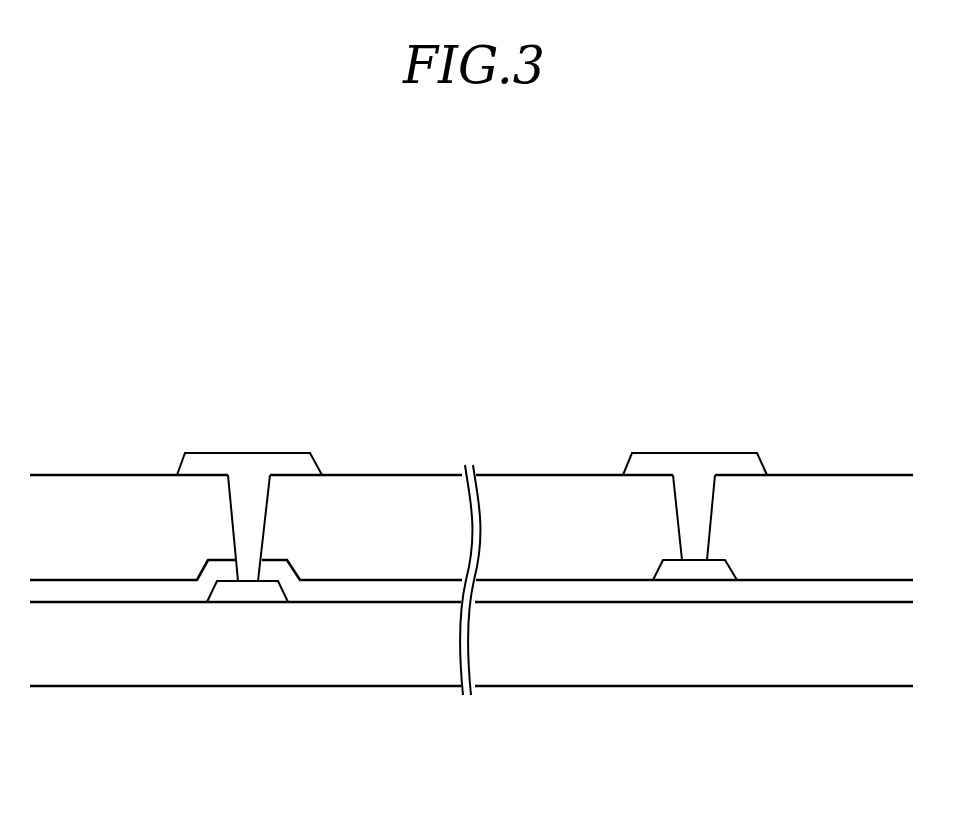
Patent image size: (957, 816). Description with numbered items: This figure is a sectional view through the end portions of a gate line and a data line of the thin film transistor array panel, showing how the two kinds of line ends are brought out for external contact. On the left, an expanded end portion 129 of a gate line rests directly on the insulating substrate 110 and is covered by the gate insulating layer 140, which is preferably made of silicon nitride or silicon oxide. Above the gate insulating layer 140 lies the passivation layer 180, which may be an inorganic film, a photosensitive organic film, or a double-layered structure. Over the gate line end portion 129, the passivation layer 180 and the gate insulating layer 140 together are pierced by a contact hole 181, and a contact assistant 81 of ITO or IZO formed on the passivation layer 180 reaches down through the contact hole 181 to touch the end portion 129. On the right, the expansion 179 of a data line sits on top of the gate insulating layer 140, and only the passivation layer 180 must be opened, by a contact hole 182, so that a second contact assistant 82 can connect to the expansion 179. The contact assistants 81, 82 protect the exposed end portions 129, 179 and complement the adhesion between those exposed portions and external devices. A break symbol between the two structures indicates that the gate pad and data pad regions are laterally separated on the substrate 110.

The passivation layer 180 is at (837, 518).
The contact assistant 81 is at (287, 460).
The contact assistant 82 is at (731, 460).
The contact hole 181 is at (243, 492).
The contact hole 182 is at (688, 492).
The gate insulating layer 140 is at (143, 592).
The end portion of gate line 129 is at (233, 592).
The expansion of data line 179 is at (678, 581).
The insulating substrate 110 is at (315, 658).